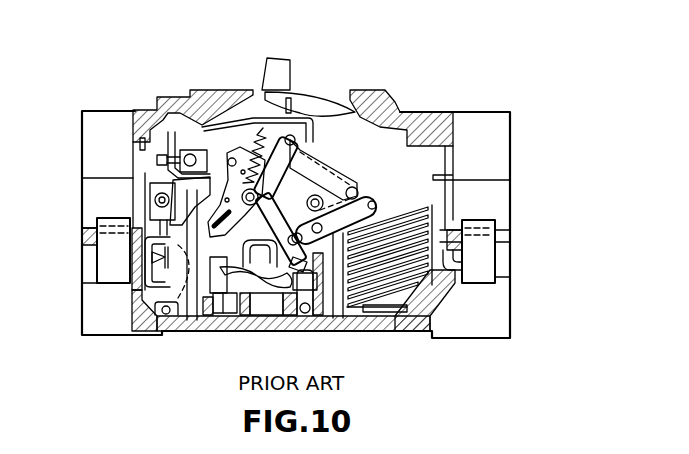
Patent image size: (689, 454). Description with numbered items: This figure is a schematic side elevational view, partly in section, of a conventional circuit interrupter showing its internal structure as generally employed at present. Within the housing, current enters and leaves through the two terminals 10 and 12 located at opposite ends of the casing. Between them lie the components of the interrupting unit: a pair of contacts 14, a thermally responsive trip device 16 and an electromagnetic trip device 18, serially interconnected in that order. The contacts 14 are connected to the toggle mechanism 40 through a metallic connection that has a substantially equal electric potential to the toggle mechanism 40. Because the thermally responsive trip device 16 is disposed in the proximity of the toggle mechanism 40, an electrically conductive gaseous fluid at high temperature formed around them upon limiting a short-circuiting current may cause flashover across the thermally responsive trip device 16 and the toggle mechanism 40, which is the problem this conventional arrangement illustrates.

The terminal 10 is at (478, 267).
The terminal 12 is at (108, 250).
The contacts 14 is at (382, 203).
The thermally responsive trip device 16 is at (184, 112).
The electromagnetic trip device 18 is at (178, 300).
The toggle mechanism 40 is at (252, 150).